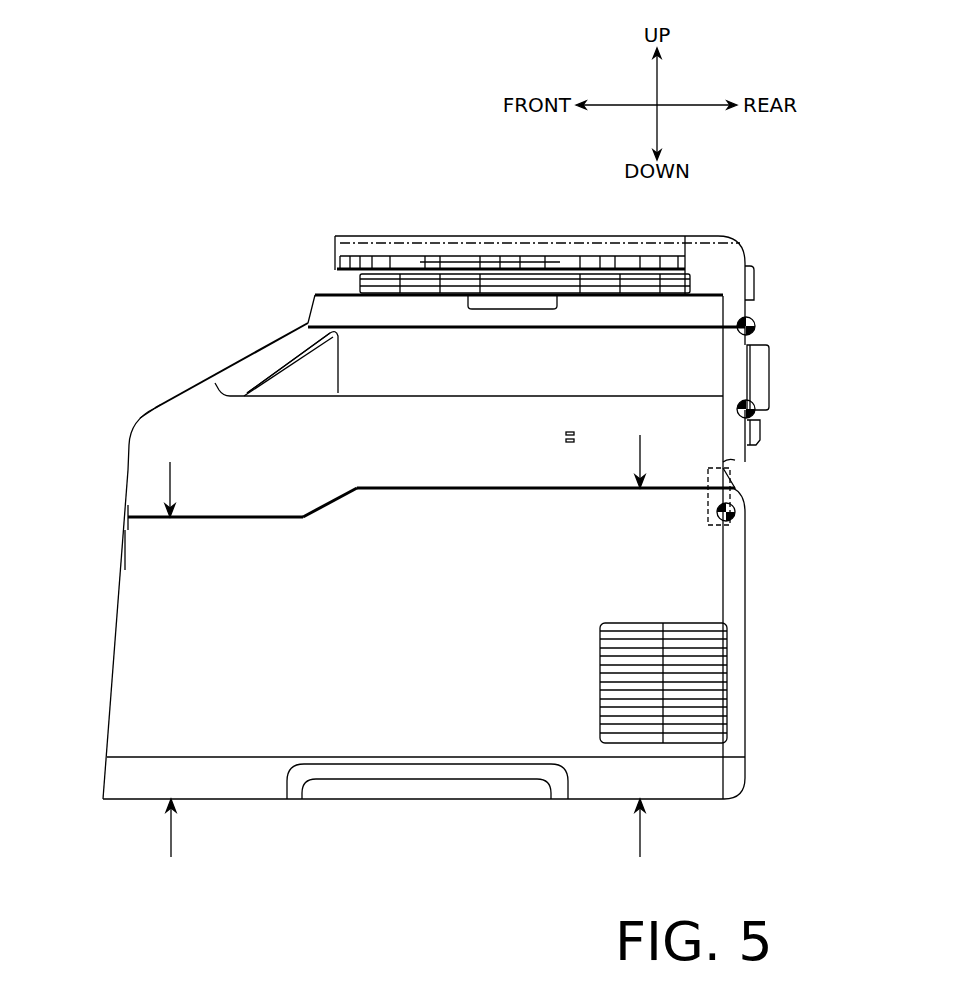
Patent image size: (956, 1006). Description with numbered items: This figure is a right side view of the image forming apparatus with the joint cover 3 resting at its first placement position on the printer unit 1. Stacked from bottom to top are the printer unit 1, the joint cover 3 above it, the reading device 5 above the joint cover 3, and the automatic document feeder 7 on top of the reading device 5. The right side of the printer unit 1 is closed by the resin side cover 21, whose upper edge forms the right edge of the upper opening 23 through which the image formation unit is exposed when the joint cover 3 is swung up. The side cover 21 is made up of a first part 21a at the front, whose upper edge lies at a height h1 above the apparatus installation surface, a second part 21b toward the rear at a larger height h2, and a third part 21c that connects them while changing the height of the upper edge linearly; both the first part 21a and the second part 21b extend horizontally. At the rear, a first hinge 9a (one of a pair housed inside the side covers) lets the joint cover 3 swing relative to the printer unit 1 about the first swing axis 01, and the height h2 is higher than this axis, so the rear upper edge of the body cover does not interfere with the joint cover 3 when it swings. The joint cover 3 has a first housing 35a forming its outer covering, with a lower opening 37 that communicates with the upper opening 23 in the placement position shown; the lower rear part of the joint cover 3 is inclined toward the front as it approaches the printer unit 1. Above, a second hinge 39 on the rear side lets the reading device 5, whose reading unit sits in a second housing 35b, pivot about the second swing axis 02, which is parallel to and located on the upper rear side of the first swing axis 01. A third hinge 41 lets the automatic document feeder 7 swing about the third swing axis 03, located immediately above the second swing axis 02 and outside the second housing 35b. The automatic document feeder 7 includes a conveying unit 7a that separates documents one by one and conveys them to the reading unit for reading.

The printer unit 1 is at (140, 642).
The joint cover 3 is at (157, 440).
The reading device 5 is at (299, 348).
The automatic document feeder 7 is at (330, 262).
The conveying unit 7a is at (504, 290).
The side cover 21 is at (245, 750).
The first part 21a is at (235, 517).
The second part 21b is at (505, 483).
The third part 21c is at (317, 502).
The upper opening 23 is at (152, 517).
The first housing 35a is at (205, 430).
The second housing 35b is at (300, 384).
The lower opening 37 is at (150, 517).
The second hinge 39 is at (768, 378).
The third hinge 41 is at (757, 296).
The first swing axis 01 is at (737, 515).
The second swing axis 02 is at (757, 411).
The third swing axis 03 is at (757, 326).
The first hinge 9a is at (735, 472).
The height in the first state h1 is at (187, 489).
The height in the second state h2 is at (656, 461).